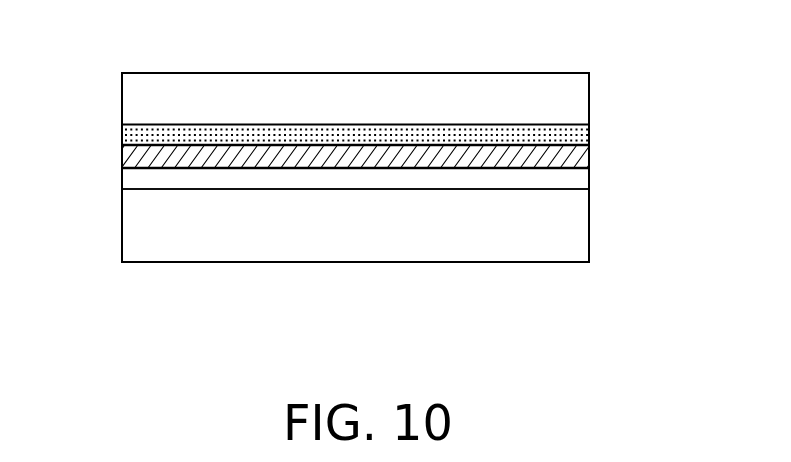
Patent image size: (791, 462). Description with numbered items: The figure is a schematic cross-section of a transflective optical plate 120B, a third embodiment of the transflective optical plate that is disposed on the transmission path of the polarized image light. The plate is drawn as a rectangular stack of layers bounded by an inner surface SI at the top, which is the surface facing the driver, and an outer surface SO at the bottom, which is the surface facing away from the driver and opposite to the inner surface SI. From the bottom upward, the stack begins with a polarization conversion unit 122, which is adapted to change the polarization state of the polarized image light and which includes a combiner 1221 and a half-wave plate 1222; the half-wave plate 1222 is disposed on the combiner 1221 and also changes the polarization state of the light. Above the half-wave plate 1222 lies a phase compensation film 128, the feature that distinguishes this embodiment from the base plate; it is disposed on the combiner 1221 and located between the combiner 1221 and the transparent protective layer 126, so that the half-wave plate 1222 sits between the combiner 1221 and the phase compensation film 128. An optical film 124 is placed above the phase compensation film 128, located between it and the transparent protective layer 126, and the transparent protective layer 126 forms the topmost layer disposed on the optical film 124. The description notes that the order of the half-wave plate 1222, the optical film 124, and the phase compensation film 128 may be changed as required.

The transflective optical plate 120B is at (688, 345).
The transparent protective layer 126 is at (568, 104).
The optical film 124 is at (565, 138).
The phase compensation film 128 is at (563, 160).
The half-wave plate 1222 is at (557, 178).
The combiner 1221 is at (568, 227).
The polarization conversion unit 122 is at (690, 177).
The inner surface SI is at (138, 73).
The outer surface SO is at (138, 262).